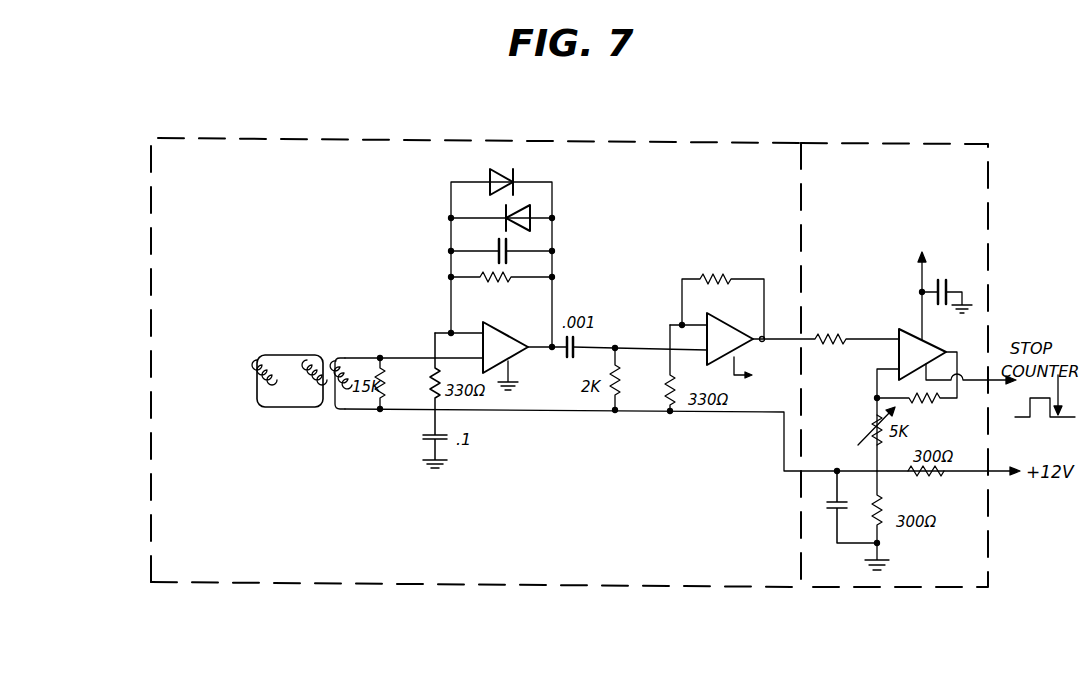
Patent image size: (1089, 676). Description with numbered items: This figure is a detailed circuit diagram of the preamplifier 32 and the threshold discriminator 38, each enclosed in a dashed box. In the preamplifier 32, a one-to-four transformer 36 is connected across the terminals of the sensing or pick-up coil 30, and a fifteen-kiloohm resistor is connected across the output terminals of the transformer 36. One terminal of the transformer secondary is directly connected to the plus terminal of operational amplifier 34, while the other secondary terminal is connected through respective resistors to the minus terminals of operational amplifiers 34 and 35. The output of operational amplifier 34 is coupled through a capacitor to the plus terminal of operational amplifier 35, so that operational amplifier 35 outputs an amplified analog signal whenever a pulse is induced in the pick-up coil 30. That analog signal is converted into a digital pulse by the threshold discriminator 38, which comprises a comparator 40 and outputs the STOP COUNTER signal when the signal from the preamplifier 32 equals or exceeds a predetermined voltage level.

The pick-up coil 30 is at (258, 406).
The preamplifier 32 is at (326, 130).
The operational amplifier 34 is at (532, 309).
The operational amplifier 35 is at (730, 324).
The 1:4 transformer 36 is at (328, 404).
The threshold discriminator 38 is at (911, 143).
The comparator 40 is at (909, 328).